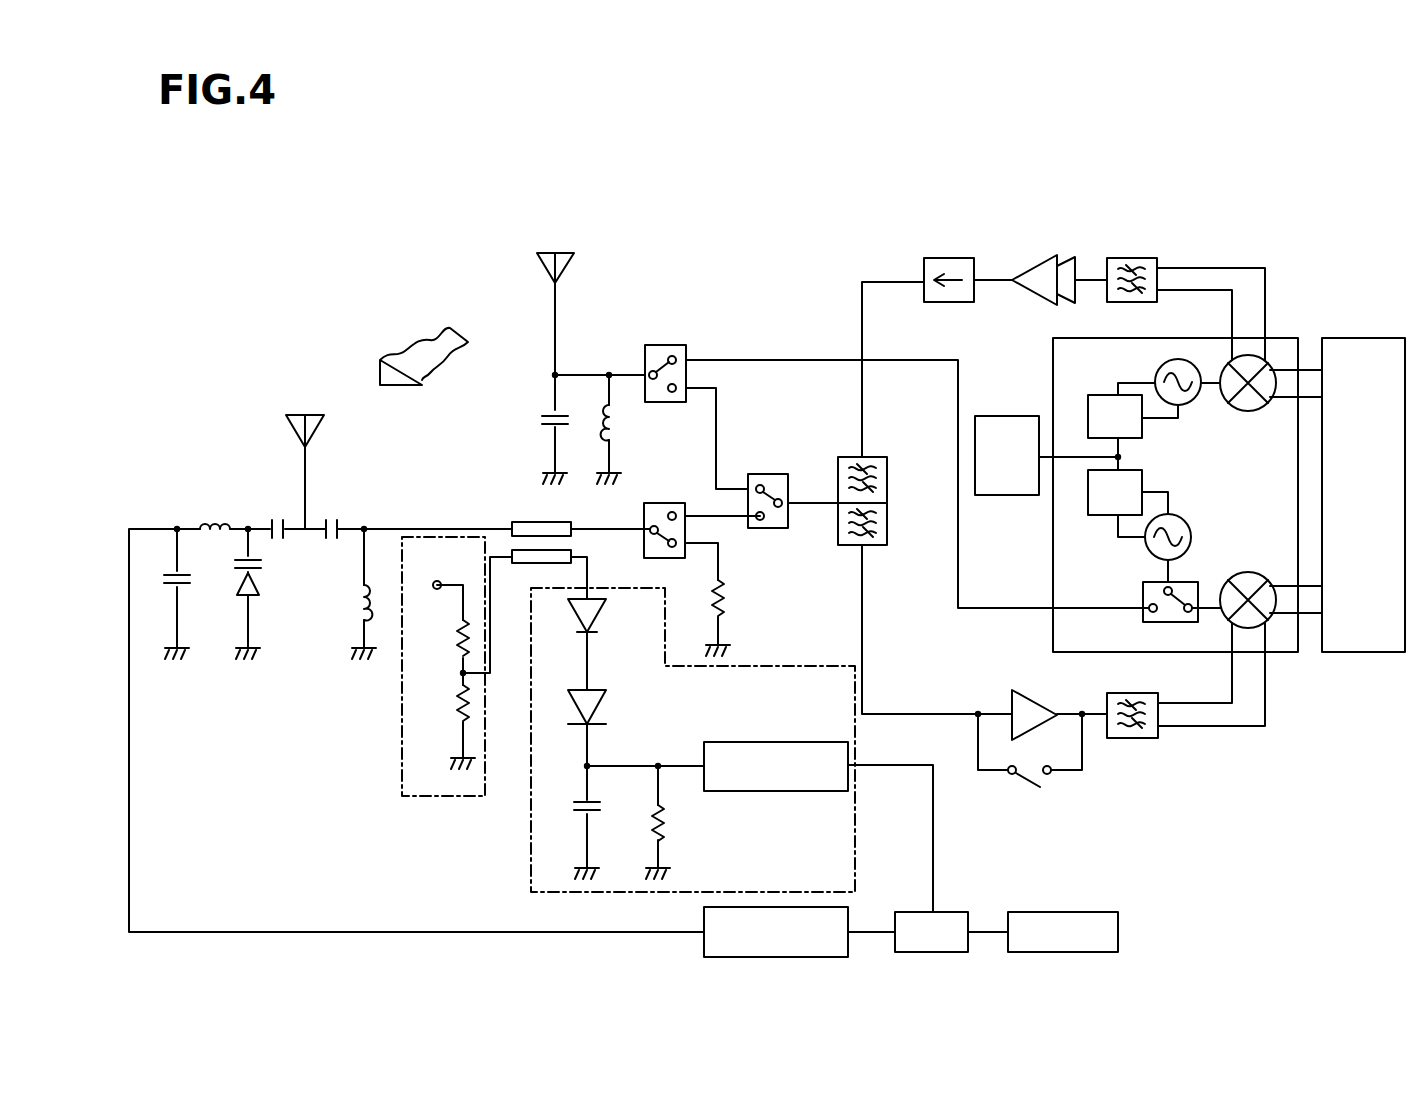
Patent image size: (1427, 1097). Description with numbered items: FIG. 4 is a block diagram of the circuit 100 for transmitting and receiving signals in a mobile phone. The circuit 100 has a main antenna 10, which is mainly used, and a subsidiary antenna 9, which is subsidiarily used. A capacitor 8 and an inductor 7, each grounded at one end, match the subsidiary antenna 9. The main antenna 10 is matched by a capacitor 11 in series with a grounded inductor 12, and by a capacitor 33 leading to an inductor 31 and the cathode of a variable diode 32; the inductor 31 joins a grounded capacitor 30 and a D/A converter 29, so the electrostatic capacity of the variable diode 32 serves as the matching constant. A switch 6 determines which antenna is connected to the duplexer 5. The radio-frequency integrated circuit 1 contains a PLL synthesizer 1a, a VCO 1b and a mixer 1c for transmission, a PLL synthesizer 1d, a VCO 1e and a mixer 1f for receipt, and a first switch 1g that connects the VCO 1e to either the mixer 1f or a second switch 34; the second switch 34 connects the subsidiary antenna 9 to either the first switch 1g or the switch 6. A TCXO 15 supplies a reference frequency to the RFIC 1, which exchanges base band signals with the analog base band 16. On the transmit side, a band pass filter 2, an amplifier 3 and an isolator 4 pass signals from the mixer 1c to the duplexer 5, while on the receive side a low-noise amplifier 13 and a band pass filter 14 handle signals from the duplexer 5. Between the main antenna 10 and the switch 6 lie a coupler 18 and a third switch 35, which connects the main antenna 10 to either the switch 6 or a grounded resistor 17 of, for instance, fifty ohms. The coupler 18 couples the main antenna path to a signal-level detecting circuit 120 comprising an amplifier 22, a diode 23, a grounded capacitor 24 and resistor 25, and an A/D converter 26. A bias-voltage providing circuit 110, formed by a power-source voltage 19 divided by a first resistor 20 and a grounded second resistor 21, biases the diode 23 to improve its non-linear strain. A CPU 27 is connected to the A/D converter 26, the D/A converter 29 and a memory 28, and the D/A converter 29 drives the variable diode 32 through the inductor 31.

The circuit for transmitting and receiving signals 100 is at (796, 207).
The radio-frequency integrated circuit 1 is at (1281, 338).
The phase-locked loop synthesizer 1a is at (1142, 428).
The voltage-controlled oscillator 1b is at (1190, 400).
The mixer 1c is at (1252, 410).
The phase-locked loop synthesizer 1d is at (1142, 480).
The voltage-controlled oscillator 1e is at (1192, 530).
The mixer 1f is at (1252, 572).
The first switch 1g is at (1143, 592).
The band pass filter 2 is at (1131, 258).
The amplifier 3 is at (1038, 260).
The isolator 4 is at (948, 258).
The duplexer 5 is at (880, 457).
The switch 6 is at (768, 474).
The inductor 7 is at (618, 425).
The capacitor 8 is at (550, 414).
The subsidiary antenna 9 is at (555, 253).
The main antenna 10 is at (302, 415).
The capacitor 11 is at (334, 520).
The inductor 12 is at (360, 600).
The low-noise amplifier 13 is at (1040, 700).
The band pass filter 14 is at (1131, 738).
The temperature-compensated crystal oscillator 15 is at (1007, 416).
The analog base band 16 is at (1363, 338).
The resistor 17 is at (724, 602).
The coupler 18 is at (512, 522).
The power-source voltage 19 is at (440, 582).
The first resistor 20 is at (458, 650).
The second resistor 21 is at (458, 712).
The amplifier 22 is at (598, 612).
The diode 23 is at (600, 705).
The capacitor 24 is at (580, 818).
The resistor 25 is at (668, 824).
The analog-digital converter 26 is at (774, 742).
The central processing unit 27 is at (958, 912).
The memory 28 is at (1062, 912).
The digital-analog converter 29 is at (704, 926).
The capacitor 30 is at (181, 586).
The inductor 31 is at (214, 520).
The variable diode 32 is at (258, 598).
The capacitor 33 is at (272, 520).
The second switch 34 is at (668, 345).
The third switch 35 is at (668, 503).
The bias-voltage providing circuit 110 is at (402, 788).
The signal-level detecting circuit 120 is at (531, 883).